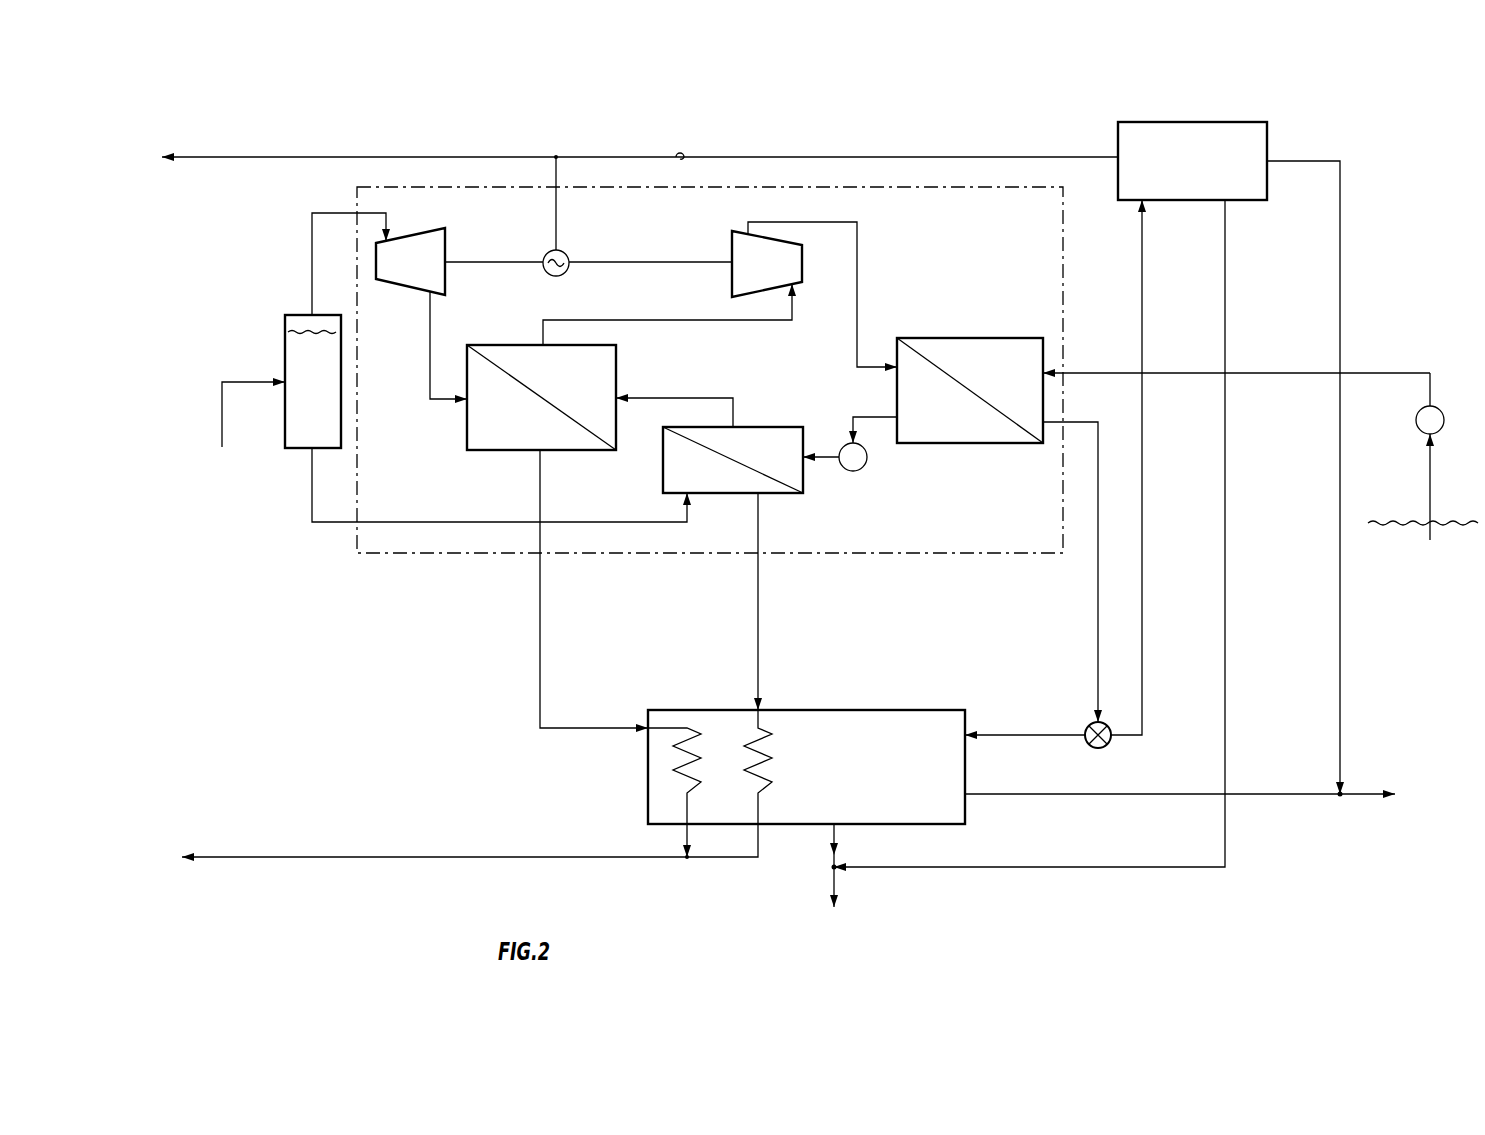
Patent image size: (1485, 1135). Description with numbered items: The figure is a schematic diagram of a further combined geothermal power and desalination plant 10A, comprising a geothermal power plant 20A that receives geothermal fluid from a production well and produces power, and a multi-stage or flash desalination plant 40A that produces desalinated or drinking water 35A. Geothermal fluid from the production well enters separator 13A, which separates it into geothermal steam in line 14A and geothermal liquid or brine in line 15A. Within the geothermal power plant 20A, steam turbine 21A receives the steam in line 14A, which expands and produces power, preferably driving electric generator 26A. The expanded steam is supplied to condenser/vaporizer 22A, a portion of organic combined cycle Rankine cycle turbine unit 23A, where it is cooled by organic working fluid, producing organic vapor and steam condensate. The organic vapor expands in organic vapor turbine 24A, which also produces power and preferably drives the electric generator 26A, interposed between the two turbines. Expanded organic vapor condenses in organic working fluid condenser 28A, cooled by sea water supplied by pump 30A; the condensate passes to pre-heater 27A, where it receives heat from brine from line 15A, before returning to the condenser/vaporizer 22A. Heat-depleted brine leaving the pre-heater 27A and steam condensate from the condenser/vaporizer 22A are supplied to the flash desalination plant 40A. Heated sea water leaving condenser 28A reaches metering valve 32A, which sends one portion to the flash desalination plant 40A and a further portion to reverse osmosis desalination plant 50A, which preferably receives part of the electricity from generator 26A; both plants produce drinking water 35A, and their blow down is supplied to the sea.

The combined geothermal power and desalination plant 10A is at (212, 122).
The separator 13A is at (285, 322).
The geothermal steam line 14A is at (312, 232).
The geothermal liquid or brine line 15A is at (312, 516).
The geothermal power plant 20A is at (357, 203).
The steam turbine 21A is at (432, 230).
The condenser/vaporizer 22A is at (473, 345).
The organic combined cycle Rankine cycle turbine unit 23A is at (519, 528).
The organic vapor turbine 24A is at (730, 247).
The electric generator 26A is at (566, 273).
The pre-heater 27A is at (760, 427).
The organic working fluid condenser 28A is at (910, 338).
The sea water pump 30A is at (1416, 418).
The metering valve 32A is at (1086, 742).
The desalinated or drinking water 35A is at (1350, 798).
The multi-stage or flash desalination plant 40A is at (890, 710).
The reverse osmosis desalination plant 50A is at (1255, 122).